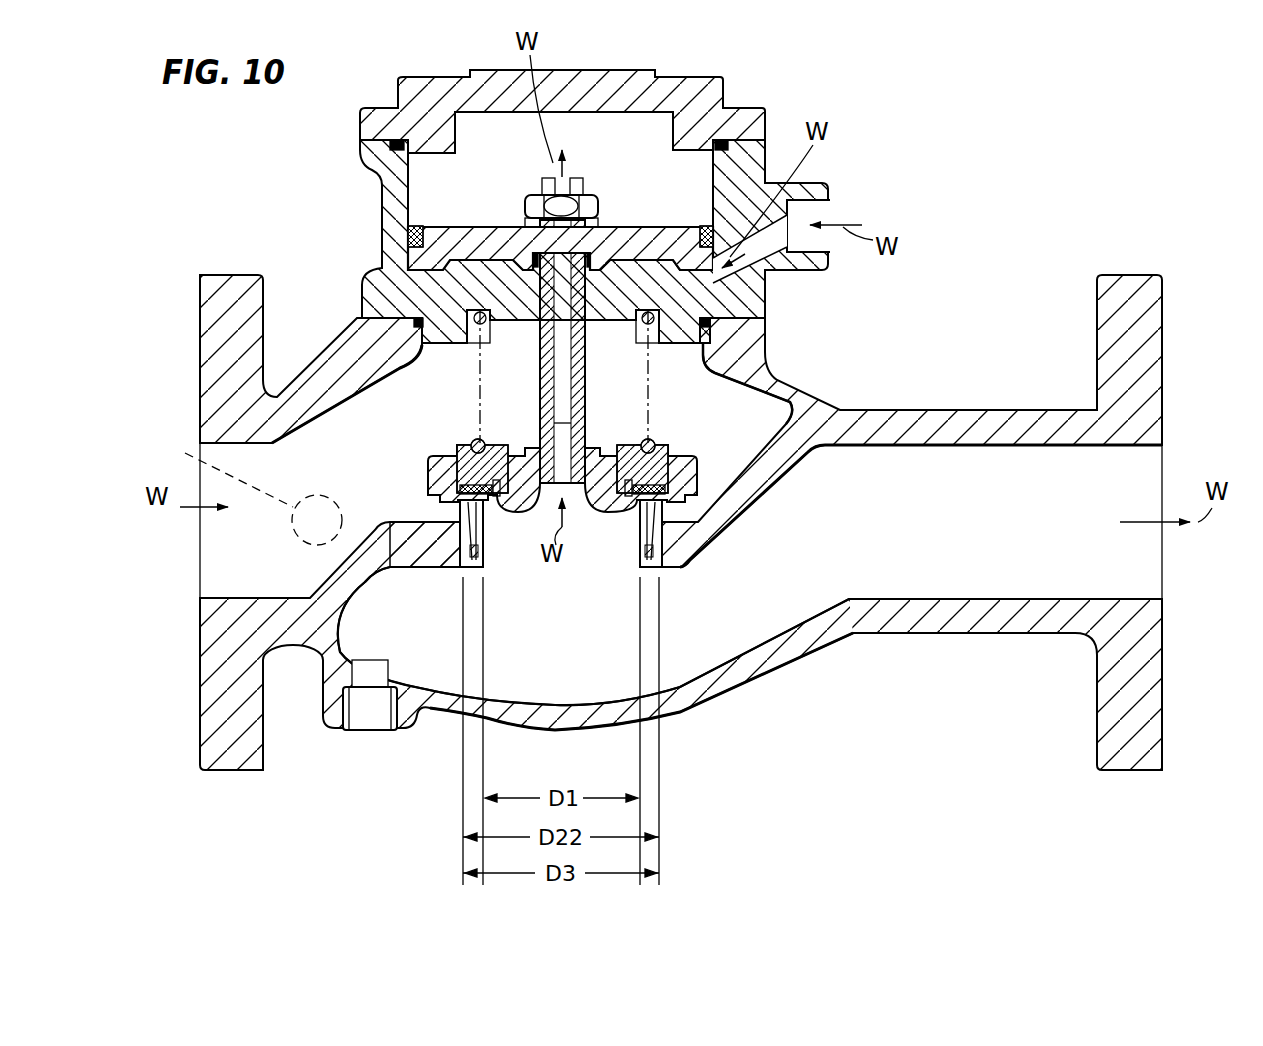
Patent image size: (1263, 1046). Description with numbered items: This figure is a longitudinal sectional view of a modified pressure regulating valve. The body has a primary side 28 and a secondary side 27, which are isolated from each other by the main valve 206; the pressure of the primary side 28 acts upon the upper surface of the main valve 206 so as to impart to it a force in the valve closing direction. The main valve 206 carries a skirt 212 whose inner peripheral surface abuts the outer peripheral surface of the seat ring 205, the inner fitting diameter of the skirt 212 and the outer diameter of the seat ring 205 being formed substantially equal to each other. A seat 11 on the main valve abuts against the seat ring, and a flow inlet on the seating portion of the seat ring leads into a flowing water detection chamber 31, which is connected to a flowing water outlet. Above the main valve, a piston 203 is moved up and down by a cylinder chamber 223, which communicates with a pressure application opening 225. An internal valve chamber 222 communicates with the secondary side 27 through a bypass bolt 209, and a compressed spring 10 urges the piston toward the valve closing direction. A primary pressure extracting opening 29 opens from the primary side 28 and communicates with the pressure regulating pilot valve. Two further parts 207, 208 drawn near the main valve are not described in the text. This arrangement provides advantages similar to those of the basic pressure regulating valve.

The piston 203 is at (598, 185).
The internal valve chamber 222 is at (613, 137).
The pressure application opening 225 is at (832, 207).
The cylinder chamber 223 is at (405, 235).
The bypass bolt 209 is at (587, 367).
The spring 10 is at (660, 390).
The seat 11 is at (573, 409).
The guide bolt 207 is at (470, 440).
The disc retainer 208 is at (455, 458).
The primary pressure extracting opening 29 is at (185, 453).
The primary side 28 is at (232, 553).
The flowing water detection chamber 31 is at (440, 570).
The main valve 206 is at (516, 516).
The seat ring 205 is at (640, 570).
The skirt 212 is at (692, 512).
The secondary side 27 is at (740, 650).